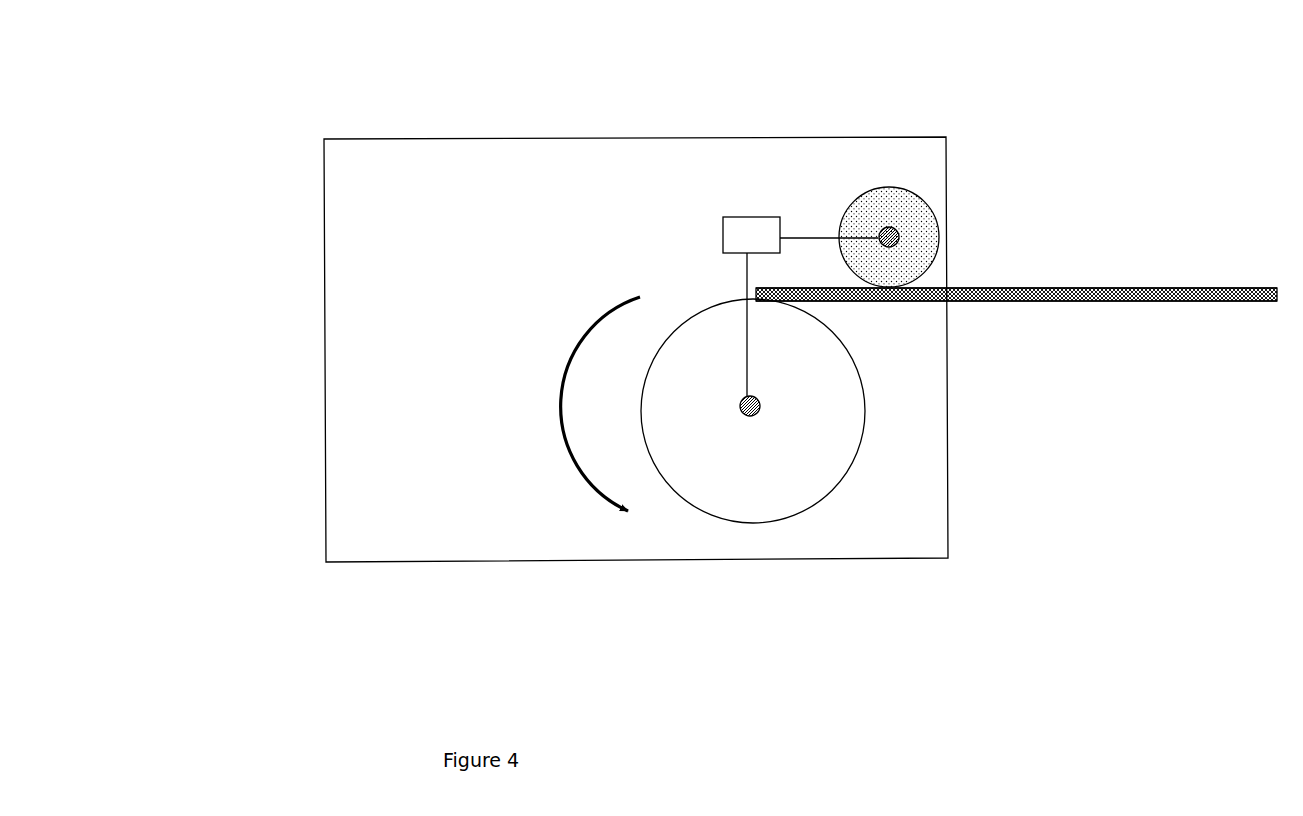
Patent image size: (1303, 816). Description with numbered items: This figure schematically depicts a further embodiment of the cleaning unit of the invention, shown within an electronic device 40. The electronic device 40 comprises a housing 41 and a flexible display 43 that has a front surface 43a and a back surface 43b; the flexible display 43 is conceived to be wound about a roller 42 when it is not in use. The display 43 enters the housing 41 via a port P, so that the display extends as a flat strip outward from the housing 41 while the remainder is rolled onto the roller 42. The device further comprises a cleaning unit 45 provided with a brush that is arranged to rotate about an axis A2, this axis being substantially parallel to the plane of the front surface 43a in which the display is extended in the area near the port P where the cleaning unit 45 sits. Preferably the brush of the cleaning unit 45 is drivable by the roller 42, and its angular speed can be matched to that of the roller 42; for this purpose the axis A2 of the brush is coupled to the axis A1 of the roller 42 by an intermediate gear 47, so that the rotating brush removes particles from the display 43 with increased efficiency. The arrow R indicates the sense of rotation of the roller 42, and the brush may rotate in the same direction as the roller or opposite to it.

The electronic device 40 is at (285, 81).
The housing 41 is at (514, 138).
The roller 42 is at (703, 308).
The cleaning unit 45 is at (846, 211).
The intermediate gear 47 is at (745, 217).
The flexible display 43 is at (1147, 292).
The front surface 43a is at (1008, 288).
The back surface 43b is at (1098, 301).
The axis of the roller A1 is at (744, 416).
The axis of the brush A2 is at (898, 234).
The port P is at (950, 283).
The direction of rotation R is at (558, 417).